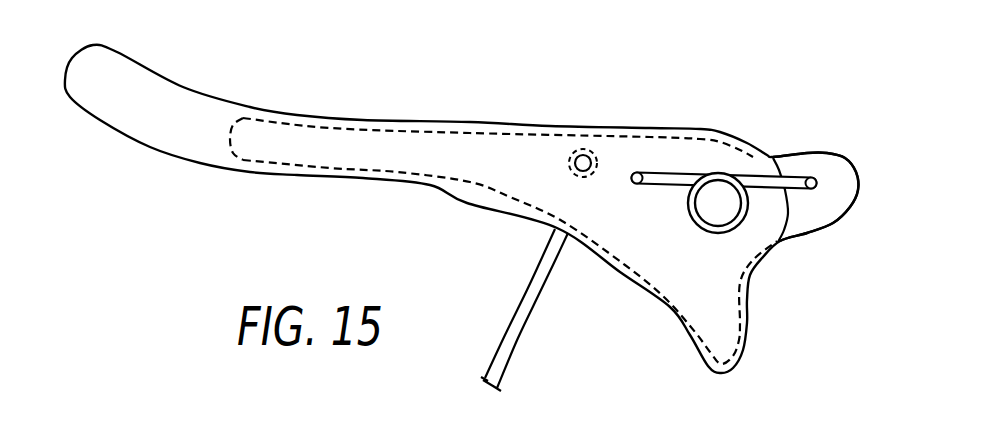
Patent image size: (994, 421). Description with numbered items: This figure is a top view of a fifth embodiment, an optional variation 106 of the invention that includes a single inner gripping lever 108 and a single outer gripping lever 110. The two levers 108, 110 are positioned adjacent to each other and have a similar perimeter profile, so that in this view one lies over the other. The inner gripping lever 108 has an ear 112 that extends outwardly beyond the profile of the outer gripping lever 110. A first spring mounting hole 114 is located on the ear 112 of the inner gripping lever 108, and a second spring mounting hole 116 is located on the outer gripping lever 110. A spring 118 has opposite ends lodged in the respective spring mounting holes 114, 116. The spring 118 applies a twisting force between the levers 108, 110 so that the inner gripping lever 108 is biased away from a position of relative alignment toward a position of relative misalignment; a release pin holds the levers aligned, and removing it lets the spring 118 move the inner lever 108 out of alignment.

The optional variation 106 is at (487, 112).
The inner gripping lever 108 is at (797, 226).
The outer gripping lever 110 is at (476, 193).
The ear 112 is at (837, 198).
The first spring mounting hole 114 is at (818, 155).
The second spring mounting hole 116 is at (647, 172).
The spring 118 is at (803, 177).